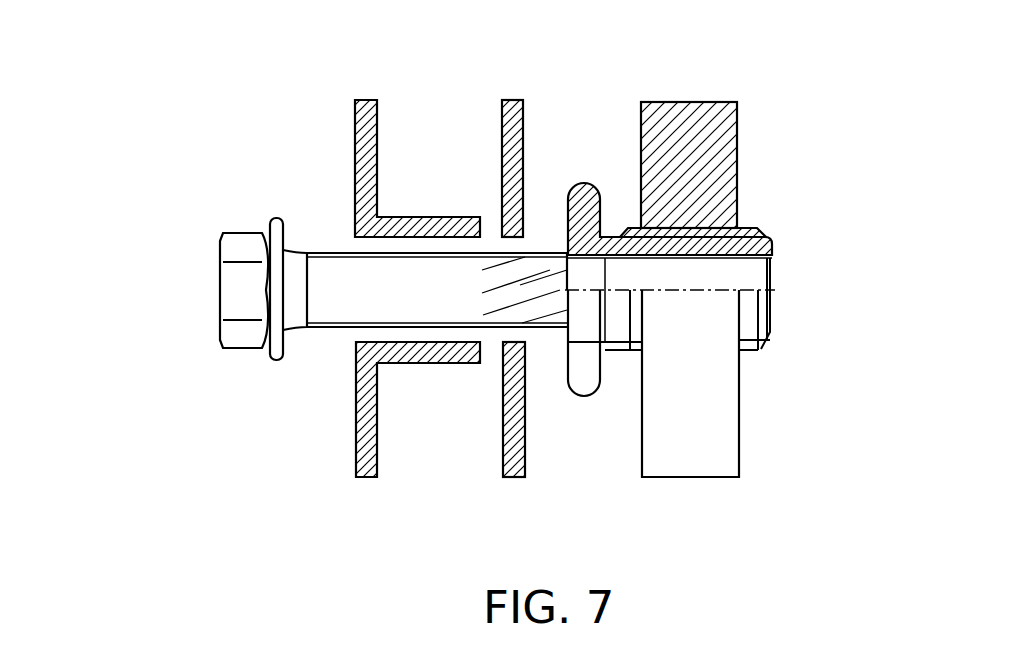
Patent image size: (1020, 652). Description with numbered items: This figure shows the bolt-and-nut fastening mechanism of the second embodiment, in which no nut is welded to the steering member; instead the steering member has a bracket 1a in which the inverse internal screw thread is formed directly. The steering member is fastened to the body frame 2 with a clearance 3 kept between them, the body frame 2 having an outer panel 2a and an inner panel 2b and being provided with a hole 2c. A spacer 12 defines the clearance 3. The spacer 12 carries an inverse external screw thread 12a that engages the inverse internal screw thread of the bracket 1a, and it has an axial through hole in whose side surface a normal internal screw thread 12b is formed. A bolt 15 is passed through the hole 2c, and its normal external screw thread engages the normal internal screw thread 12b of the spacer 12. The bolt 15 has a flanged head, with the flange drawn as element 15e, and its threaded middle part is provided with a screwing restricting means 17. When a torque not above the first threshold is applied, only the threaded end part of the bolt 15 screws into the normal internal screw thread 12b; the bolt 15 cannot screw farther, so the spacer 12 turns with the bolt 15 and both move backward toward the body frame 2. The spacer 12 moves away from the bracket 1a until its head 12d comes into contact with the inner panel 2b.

The bracket 1a is at (693, 445).
The body frame 2 is at (440, 339).
The outer panel 2a is at (378, 425).
The inner panel 2b is at (503, 455).
The hole 2c is at (411, 337).
The clearance 3 is at (602, 155).
The spacer 12 is at (696, 304).
The inverse external screw thread 12a is at (750, 231).
The normal internal screw thread 12b is at (718, 260).
The head 12d is at (617, 333).
The bolt 15 is at (351, 227).
The bolt flange 15e is at (282, 238).
The screwing restricting means 17 is at (528, 287).